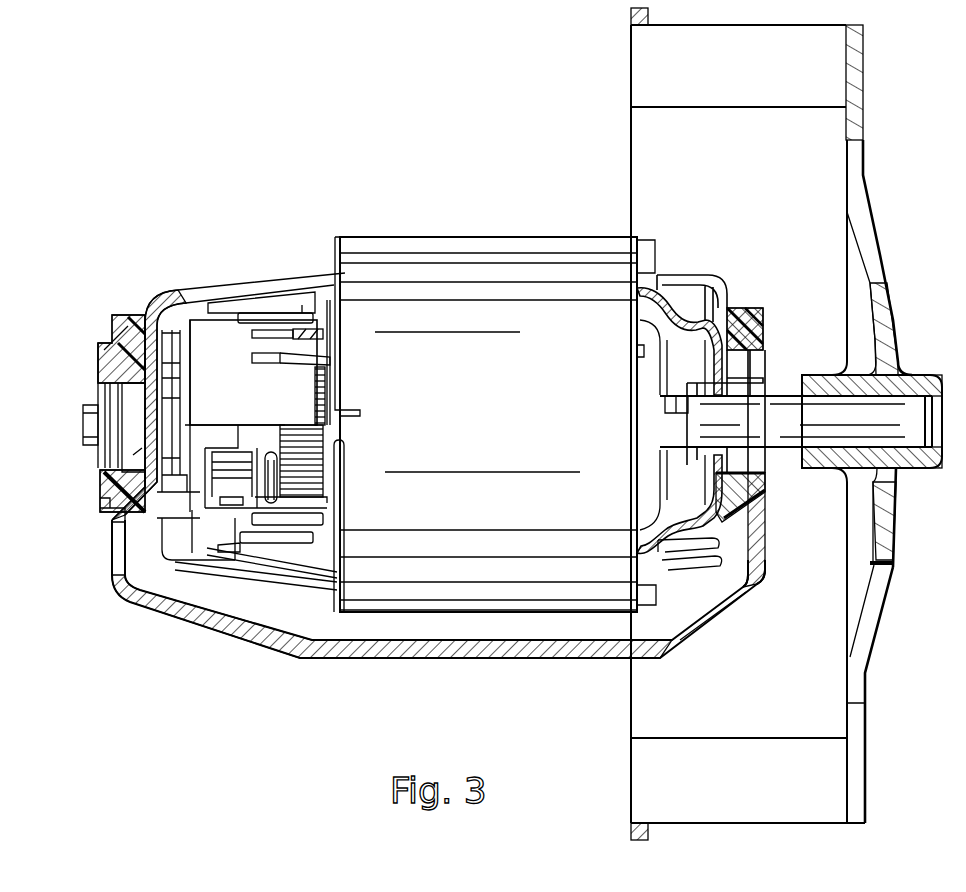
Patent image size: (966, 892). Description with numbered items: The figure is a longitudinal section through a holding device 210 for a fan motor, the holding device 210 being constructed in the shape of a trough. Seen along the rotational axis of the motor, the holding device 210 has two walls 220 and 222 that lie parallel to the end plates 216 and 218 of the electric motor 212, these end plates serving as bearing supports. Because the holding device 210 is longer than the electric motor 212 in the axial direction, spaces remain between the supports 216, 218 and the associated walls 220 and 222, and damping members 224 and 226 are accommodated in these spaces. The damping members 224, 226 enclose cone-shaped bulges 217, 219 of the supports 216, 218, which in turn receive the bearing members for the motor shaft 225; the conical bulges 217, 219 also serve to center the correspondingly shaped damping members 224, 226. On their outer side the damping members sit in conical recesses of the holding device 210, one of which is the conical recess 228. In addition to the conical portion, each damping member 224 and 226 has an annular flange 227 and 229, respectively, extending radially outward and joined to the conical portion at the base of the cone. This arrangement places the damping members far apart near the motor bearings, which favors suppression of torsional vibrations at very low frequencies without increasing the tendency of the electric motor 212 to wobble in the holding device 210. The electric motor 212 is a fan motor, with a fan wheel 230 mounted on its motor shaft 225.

The holding device 210 is at (258, 642).
The electric motor 212 is at (470, 228).
The end plate 216 is at (181, 300).
The cone-shaped bulge 217 is at (132, 440).
The end plate 218 is at (684, 278).
The cone-shaped bulge 219 is at (765, 460).
The wall 220 is at (113, 330).
The wall 222 is at (770, 306).
The damping member 224 is at (134, 320).
The motor shaft 225 is at (782, 410).
The damping member 226 is at (99, 372).
The annular flange 227 is at (133, 600).
The conical recess 228 is at (768, 490).
The annular flange 229 is at (750, 582).
The fan wheel 230 is at (632, 60).